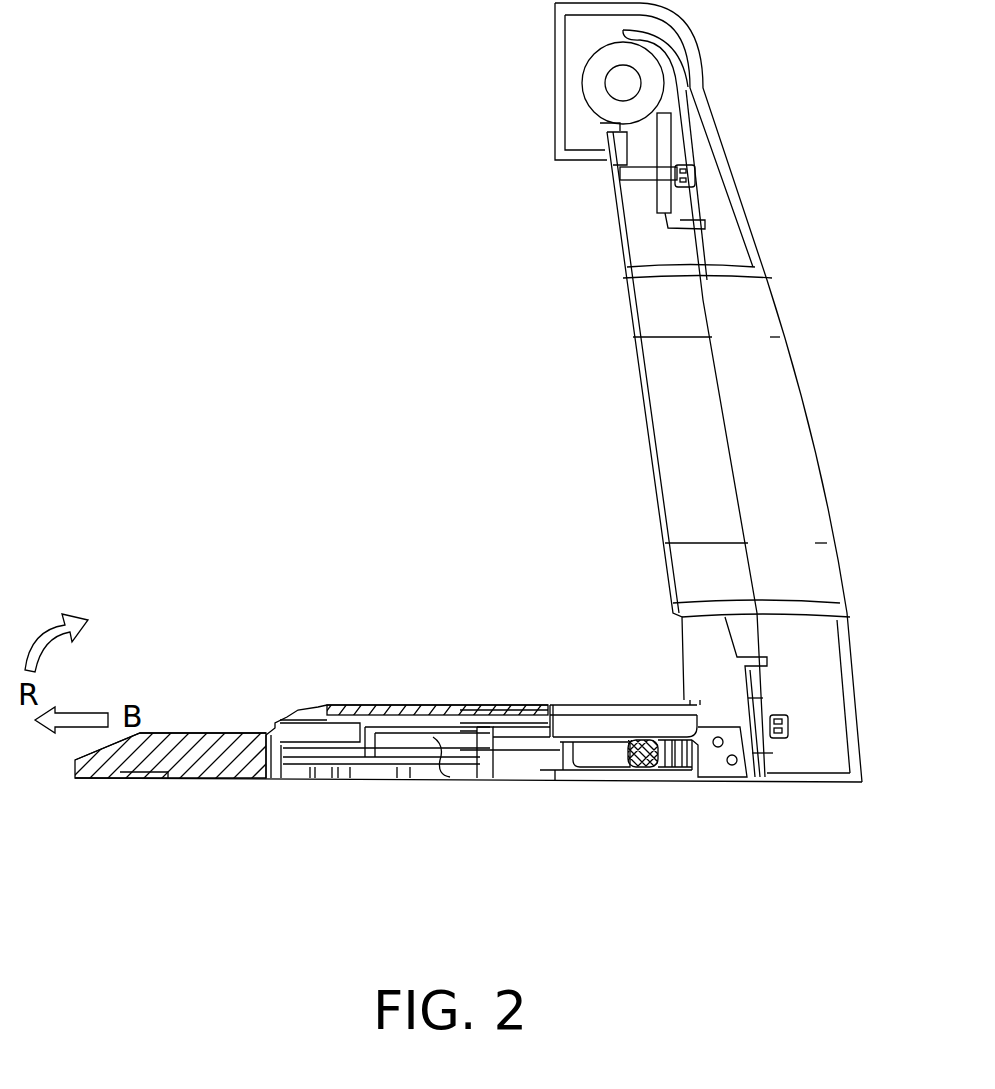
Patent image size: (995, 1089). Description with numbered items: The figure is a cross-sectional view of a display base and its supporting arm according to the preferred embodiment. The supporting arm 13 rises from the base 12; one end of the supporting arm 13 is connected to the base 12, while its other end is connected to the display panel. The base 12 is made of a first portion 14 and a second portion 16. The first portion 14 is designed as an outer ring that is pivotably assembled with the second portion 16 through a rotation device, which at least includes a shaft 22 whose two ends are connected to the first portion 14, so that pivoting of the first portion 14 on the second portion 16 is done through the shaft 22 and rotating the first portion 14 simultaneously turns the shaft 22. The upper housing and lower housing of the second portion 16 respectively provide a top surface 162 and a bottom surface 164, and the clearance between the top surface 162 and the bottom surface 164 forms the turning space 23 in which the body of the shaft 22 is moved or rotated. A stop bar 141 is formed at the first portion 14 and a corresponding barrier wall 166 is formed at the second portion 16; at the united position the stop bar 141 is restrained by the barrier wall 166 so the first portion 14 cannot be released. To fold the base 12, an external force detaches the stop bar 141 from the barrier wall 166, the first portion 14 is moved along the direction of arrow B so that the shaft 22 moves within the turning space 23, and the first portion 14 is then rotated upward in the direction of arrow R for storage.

The base 12 is at (70, 768).
The supporting arm 13 is at (808, 406).
The first portion 14 is at (220, 768).
The stop bar 141 is at (510, 705).
The second portion 16 is at (585, 702).
The top surface 162 is at (627, 731).
The bottom surface 164 is at (612, 772).
The barrier wall 166 is at (483, 733).
The shaft 22 is at (645, 770).
The turning space 23 is at (601, 760).